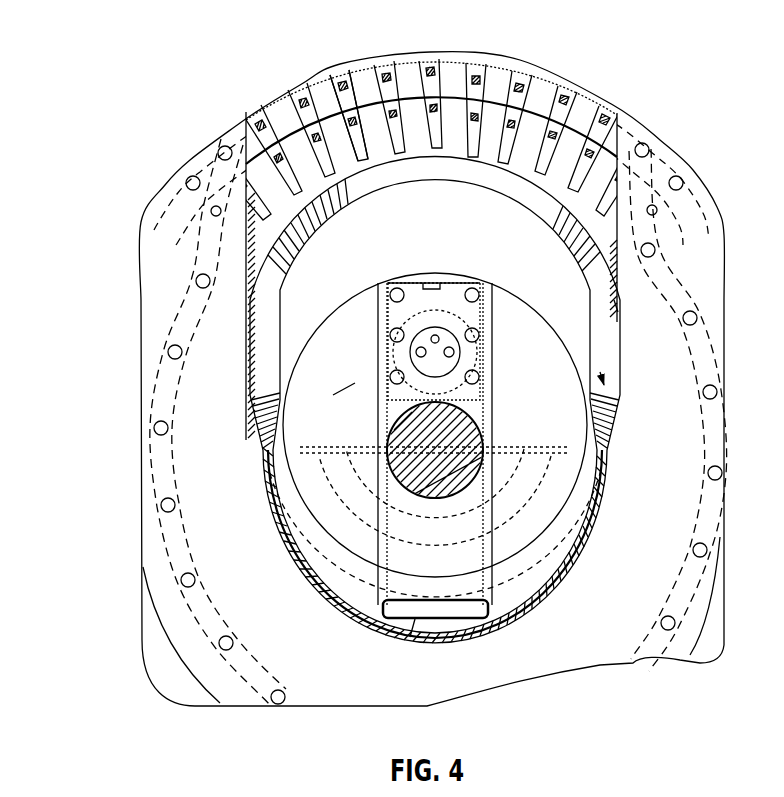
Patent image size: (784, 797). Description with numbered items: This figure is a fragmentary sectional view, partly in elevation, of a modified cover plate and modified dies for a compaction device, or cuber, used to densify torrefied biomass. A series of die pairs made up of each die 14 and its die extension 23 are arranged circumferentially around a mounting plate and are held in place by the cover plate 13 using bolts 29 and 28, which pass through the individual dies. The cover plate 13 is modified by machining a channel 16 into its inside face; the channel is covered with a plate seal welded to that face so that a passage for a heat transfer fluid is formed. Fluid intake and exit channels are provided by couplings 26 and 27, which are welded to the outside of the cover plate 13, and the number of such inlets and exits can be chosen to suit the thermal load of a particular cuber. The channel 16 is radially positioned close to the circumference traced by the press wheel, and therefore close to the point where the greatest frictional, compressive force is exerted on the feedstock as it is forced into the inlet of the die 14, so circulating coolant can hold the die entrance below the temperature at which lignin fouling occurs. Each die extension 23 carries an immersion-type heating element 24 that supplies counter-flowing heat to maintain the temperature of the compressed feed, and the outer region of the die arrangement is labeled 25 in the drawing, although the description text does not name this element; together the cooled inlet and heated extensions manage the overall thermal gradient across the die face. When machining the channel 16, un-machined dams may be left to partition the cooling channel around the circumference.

The cover plate 13 is at (675, 149).
The die 14 is at (311, 151).
The channel 16 is at (149, 400).
The die extension 23 is at (291, 96).
The immersion-type heating element 24 is at (349, 63).
The fin cap 25 is at (521, 58).
The coupling 26 is at (167, 352).
The coupling 27 is at (195, 280).
The bolt 28 is at (208, 210).
The bolt 29 is at (186, 174).